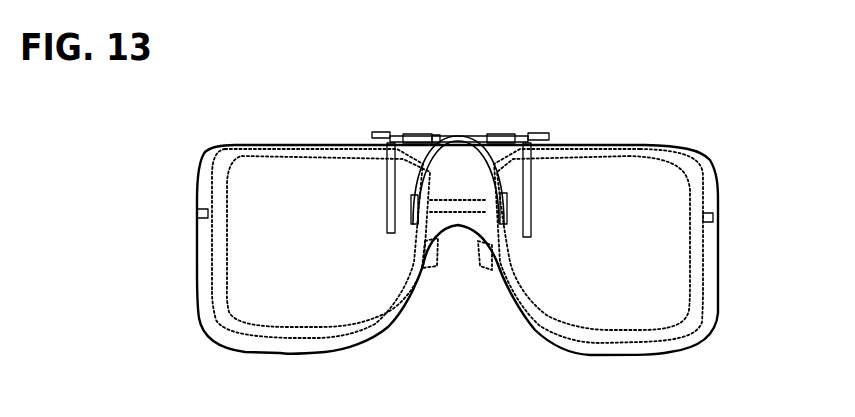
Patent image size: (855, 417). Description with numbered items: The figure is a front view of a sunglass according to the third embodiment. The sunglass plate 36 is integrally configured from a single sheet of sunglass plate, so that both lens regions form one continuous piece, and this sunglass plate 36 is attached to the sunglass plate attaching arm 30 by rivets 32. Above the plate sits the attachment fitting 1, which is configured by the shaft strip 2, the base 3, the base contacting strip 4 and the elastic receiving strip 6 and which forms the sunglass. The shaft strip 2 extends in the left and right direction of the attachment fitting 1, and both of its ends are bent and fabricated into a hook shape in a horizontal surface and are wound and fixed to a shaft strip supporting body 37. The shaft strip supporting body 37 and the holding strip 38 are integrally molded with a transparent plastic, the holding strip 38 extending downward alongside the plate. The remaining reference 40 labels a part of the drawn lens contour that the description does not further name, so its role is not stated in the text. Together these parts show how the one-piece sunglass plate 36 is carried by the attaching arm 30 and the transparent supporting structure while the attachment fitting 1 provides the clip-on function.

The attachment fitting 1 is at (465, 128).
The shaft strip 2 is at (528, 133).
The base 3 is at (478, 132).
The base contacting strip 4 is at (507, 132).
The elastic receiving strip 6 is at (403, 133).
The sunglass plate attaching arm 30 is at (441, 134).
The rivets 32 is at (413, 226).
The sunglass plate 36 is at (703, 324).
The shaft strip supporting body 37 is at (550, 134).
The holding strip 38 is at (533, 182).
The lens inner contour 40 is at (705, 247).